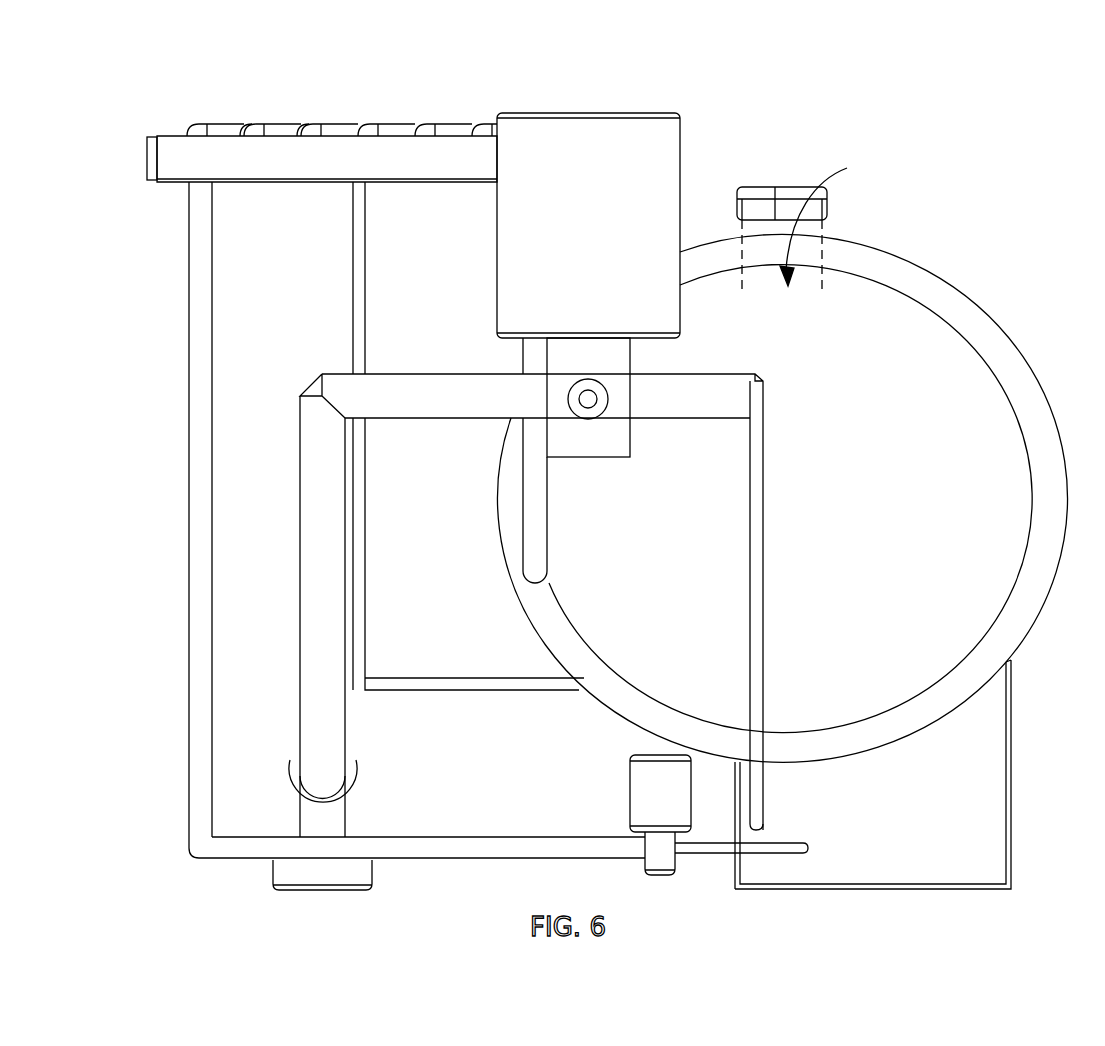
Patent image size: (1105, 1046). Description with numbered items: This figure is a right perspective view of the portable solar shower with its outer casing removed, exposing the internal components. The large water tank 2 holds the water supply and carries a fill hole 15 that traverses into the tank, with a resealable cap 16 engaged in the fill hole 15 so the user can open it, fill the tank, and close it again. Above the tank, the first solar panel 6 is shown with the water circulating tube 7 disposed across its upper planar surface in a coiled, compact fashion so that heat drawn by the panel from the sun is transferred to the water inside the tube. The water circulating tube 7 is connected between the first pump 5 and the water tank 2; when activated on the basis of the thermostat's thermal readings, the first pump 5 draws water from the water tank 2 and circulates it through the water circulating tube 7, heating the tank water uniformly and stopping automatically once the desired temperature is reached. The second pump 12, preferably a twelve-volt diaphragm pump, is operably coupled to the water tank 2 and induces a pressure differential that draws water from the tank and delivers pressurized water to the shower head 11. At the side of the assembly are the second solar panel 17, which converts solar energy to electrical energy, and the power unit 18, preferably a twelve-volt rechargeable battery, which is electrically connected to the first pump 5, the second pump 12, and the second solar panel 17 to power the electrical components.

The water tank 2 is at (962, 302).
The first pump 5 is at (645, 792).
The first solar panel 6 is at (283, 170).
The water circulating tube 7 is at (221, 130).
The shower head 11 is at (308, 873).
The second pump 12 is at (509, 268).
The fill hole 15 is at (827, 220).
The resealable cap 16 is at (768, 207).
The second solar panel 17 is at (148, 163).
The power unit 18 is at (988, 793).